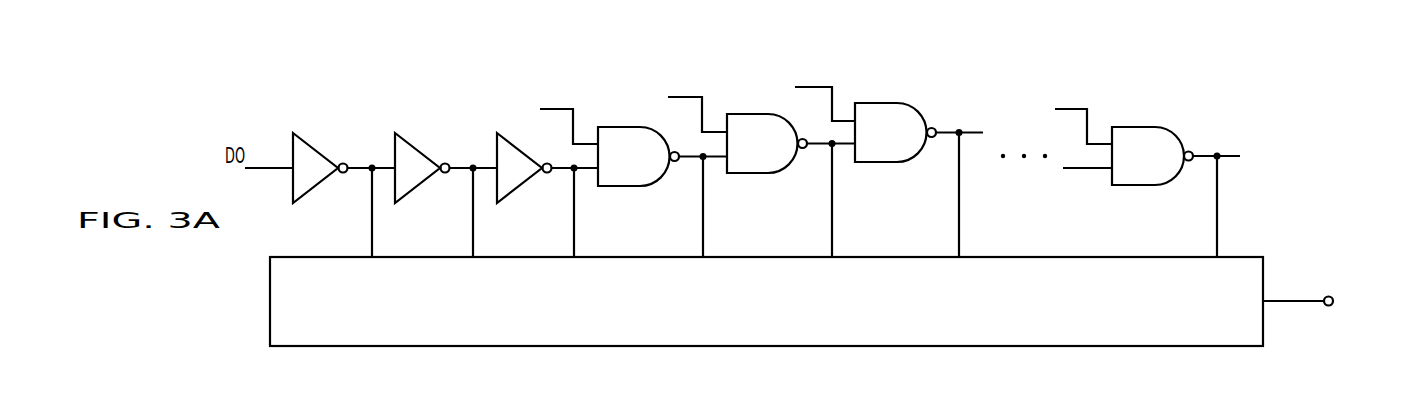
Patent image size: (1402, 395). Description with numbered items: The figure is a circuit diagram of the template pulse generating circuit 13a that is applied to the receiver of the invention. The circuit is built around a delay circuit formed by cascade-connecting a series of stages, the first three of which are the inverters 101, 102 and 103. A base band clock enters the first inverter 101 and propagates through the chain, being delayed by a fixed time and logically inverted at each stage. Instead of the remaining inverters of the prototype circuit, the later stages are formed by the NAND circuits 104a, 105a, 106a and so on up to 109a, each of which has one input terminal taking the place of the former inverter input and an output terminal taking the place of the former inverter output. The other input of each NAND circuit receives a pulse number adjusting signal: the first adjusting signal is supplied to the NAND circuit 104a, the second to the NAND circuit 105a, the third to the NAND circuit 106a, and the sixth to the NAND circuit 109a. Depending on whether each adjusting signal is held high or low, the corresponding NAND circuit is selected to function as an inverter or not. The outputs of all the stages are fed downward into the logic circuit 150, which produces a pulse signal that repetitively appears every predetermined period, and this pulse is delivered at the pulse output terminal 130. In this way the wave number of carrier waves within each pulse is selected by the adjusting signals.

The template pulse generating circuit 13a is at (320, 97).
The inverter 101 is at (305, 197).
The inverter 102 is at (407, 197).
The inverter 103 is at (508, 197).
The NAND circuit 104a is at (617, 188).
The NAND circuit 105a is at (745, 175).
The NAND circuit 106a is at (875, 164).
The NAND circuit 109a is at (1132, 187).
The logic circuit 150 is at (325, 256).
The pulse output terminal 130 is at (1334, 301).